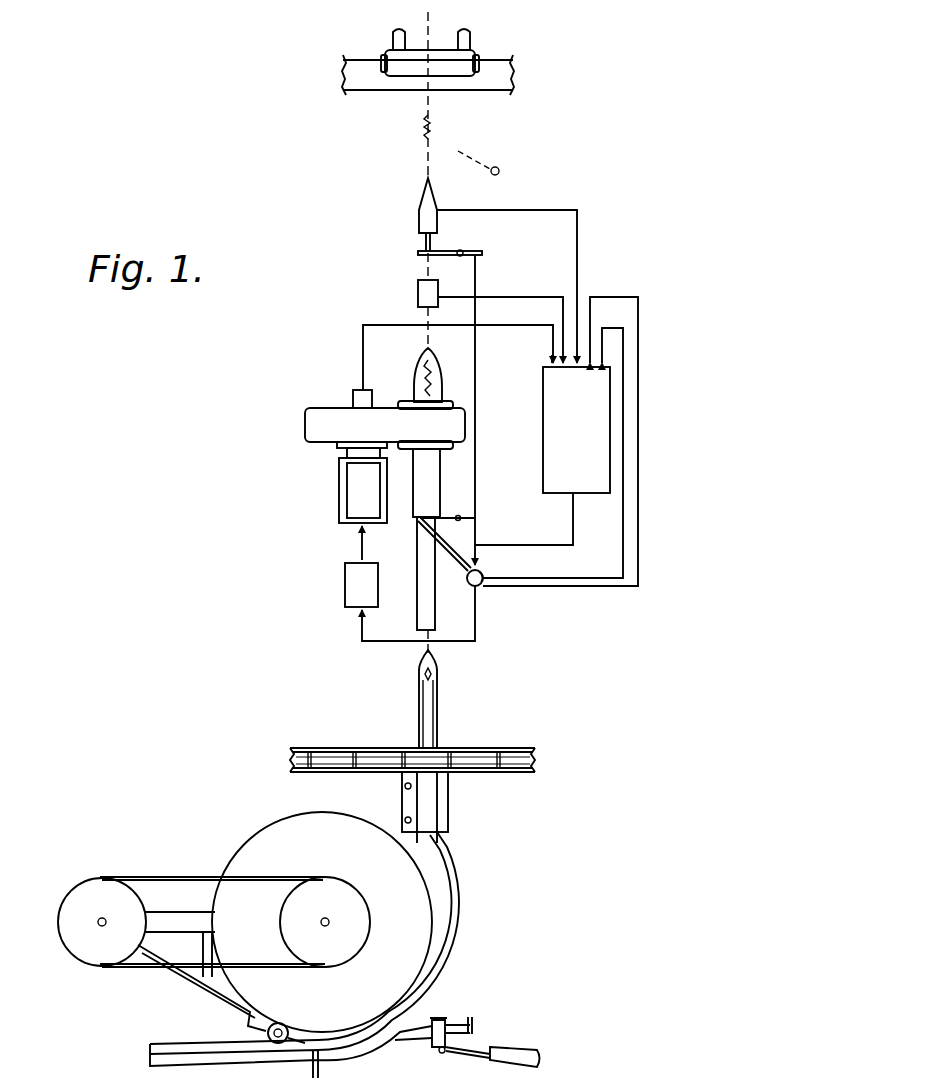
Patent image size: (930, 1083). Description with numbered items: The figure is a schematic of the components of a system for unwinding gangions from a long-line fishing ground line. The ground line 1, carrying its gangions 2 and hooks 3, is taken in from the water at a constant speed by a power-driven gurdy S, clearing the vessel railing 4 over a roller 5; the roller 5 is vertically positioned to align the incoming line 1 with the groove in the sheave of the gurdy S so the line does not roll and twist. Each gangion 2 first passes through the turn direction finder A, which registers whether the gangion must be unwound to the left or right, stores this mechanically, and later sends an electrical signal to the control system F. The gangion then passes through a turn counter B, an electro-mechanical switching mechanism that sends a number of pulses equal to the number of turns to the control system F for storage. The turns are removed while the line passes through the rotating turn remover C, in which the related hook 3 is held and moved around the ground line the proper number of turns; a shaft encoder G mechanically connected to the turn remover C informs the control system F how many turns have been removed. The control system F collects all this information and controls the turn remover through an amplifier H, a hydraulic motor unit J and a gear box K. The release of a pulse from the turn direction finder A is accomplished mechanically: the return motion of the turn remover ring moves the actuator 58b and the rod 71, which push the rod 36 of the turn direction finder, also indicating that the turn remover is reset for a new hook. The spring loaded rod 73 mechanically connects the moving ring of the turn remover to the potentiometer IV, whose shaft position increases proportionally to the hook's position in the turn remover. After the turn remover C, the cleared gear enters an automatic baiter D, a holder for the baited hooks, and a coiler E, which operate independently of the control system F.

The ground line 1 is at (426, 161).
The gangion 2 is at (437, 143).
The hook 3 is at (500, 173).
The vessel railing 4 is at (500, 81).
The roller 5 is at (405, 68).
The rod 36 is at (424, 244).
The rod 71 is at (477, 362).
The actuator 58b is at (455, 524).
The spring loaded rod 73 is at (459, 567).
The potentiometer IV is at (516, 598).
The turn direction finder A is at (418, 208).
The turn counter B is at (417, 296).
The turn remover C is at (440, 493).
The automatic baiter D is at (498, 747).
The coiler E is at (72, 868).
The control system F is at (557, 417).
The shaft encoder G is at (360, 397).
The amplifier H is at (350, 600).
The hydraulic motor unit J is at (350, 498).
The gear box K is at (312, 428).
The gurdy S is at (466, 922).